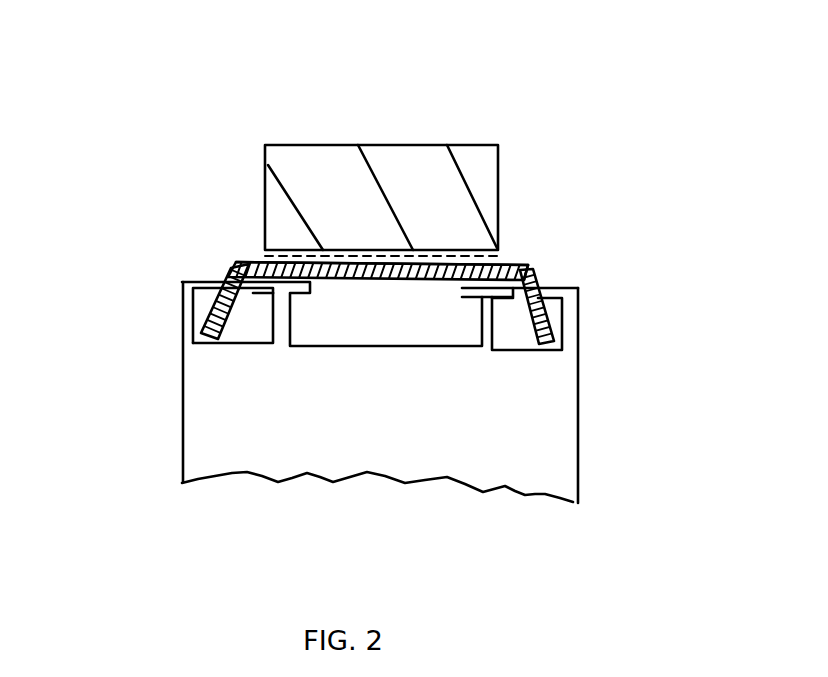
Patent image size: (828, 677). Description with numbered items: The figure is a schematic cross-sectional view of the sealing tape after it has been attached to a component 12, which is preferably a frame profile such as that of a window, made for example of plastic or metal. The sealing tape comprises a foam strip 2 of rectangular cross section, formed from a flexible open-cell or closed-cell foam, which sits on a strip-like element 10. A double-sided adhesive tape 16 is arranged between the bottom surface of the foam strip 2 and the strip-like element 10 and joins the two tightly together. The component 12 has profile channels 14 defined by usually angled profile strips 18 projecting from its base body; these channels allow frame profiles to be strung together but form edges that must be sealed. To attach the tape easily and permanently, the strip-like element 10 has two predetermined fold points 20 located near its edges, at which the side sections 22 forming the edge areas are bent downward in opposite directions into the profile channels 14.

The foam strip 2 is at (313, 172).
The strip-like element 10 is at (410, 278).
The component 12 is at (235, 418).
The profile channel 14 is at (245, 315).
The double-sided adhesive tape 16 is at (355, 259).
The profile strip 18 is at (240, 268).
The predetermined fold point 20 is at (528, 266).
The side section 22 is at (547, 317).